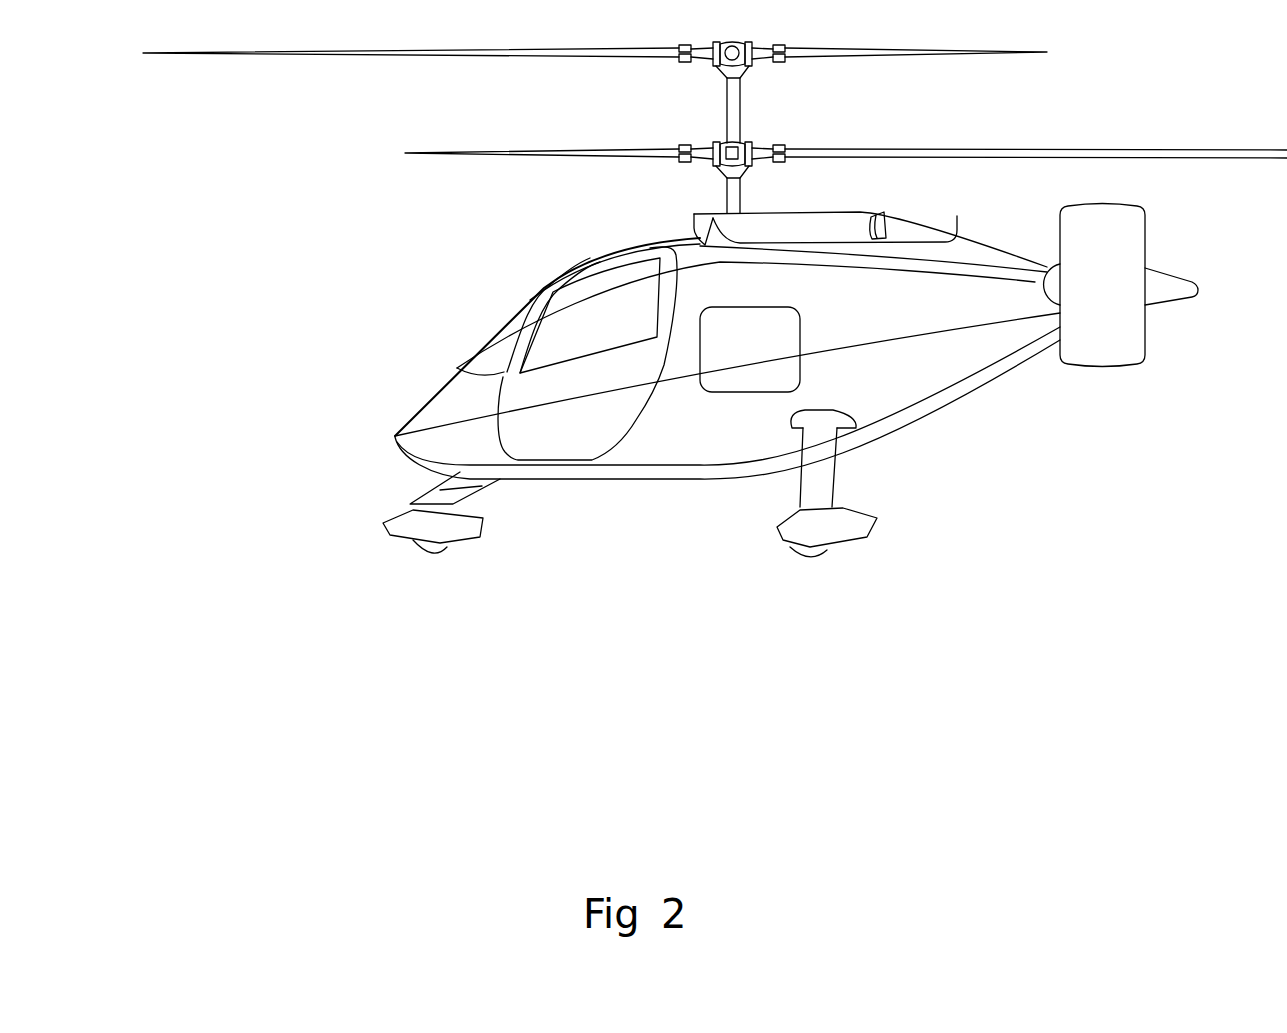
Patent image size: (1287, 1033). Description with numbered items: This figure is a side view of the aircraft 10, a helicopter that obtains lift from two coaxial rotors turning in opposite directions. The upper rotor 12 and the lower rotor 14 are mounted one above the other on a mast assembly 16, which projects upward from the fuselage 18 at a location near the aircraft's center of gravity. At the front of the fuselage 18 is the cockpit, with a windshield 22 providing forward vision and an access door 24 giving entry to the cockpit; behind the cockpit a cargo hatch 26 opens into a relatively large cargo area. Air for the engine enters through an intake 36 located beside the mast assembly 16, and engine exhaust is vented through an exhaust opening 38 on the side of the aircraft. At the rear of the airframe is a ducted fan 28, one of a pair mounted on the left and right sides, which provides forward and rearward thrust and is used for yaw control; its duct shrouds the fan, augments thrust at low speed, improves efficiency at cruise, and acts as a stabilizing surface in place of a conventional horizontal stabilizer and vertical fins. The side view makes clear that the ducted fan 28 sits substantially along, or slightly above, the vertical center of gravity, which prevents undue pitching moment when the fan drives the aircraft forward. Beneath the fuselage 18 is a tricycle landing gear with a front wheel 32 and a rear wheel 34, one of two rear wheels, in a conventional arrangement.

The aircraft 10 is at (252, 280).
The upper rotor 12 is at (1122, 58).
The lower rotor 14 is at (321, 160).
The mast assembly 16 is at (740, 127).
The fuselage 18 is at (877, 405).
The windshield 22 is at (487, 327).
The access door 24 is at (572, 432).
The cargo hatch 26 is at (780, 380).
The ducted fan 28 is at (1140, 257).
The front wheel 32 is at (407, 540).
The rear wheel 34 is at (810, 558).
The intake 36 is at (688, 236).
The exhaust opening 38 is at (907, 228).